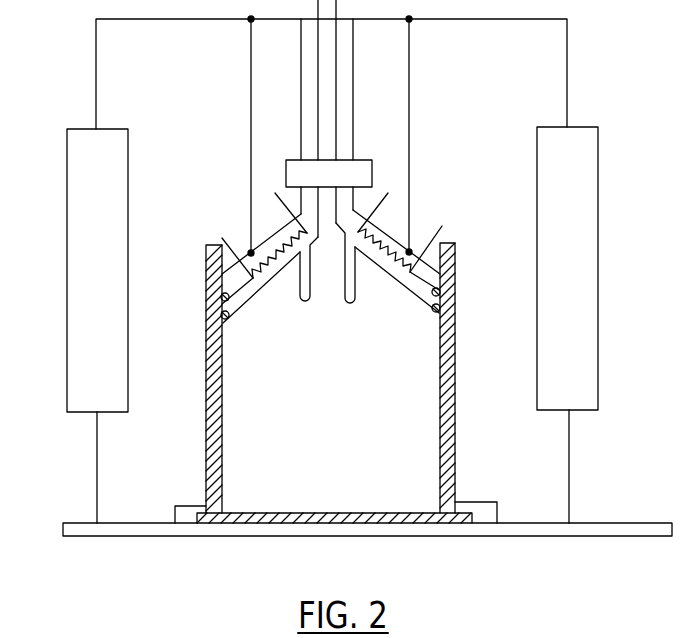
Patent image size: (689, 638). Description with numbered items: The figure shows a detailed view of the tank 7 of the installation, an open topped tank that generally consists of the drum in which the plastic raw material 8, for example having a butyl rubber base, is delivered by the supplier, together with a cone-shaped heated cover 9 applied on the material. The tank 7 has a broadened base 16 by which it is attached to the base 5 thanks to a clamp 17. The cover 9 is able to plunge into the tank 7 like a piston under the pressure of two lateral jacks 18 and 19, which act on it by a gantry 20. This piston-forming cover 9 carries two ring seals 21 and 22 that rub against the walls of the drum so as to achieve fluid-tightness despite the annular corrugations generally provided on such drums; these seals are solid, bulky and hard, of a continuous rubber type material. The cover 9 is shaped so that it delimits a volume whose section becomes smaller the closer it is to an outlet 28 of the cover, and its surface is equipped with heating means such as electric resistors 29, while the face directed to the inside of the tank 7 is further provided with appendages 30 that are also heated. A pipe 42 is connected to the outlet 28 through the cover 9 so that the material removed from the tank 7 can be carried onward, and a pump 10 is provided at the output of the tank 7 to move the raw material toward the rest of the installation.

The base 5 is at (542, 528).
The tank 7 is at (455, 442).
The raw material 8 is at (353, 467).
The heated cover 9 is at (240, 283).
The pump 10 is at (363, 167).
The broadened base 16 is at (463, 520).
The clamp 17 is at (188, 517).
The lateral jack 18 is at (575, 292).
The lateral jack 19 is at (88, 358).
The gantry 20 is at (157, 20).
The ring seal 21 is at (222, 306).
The ring seal 22 is at (220, 323).
The outlet 28 is at (343, 212).
The electric resistors 29 is at (443, 225).
The appendages 30 is at (308, 315).
The pipe 42 is at (325, 97).